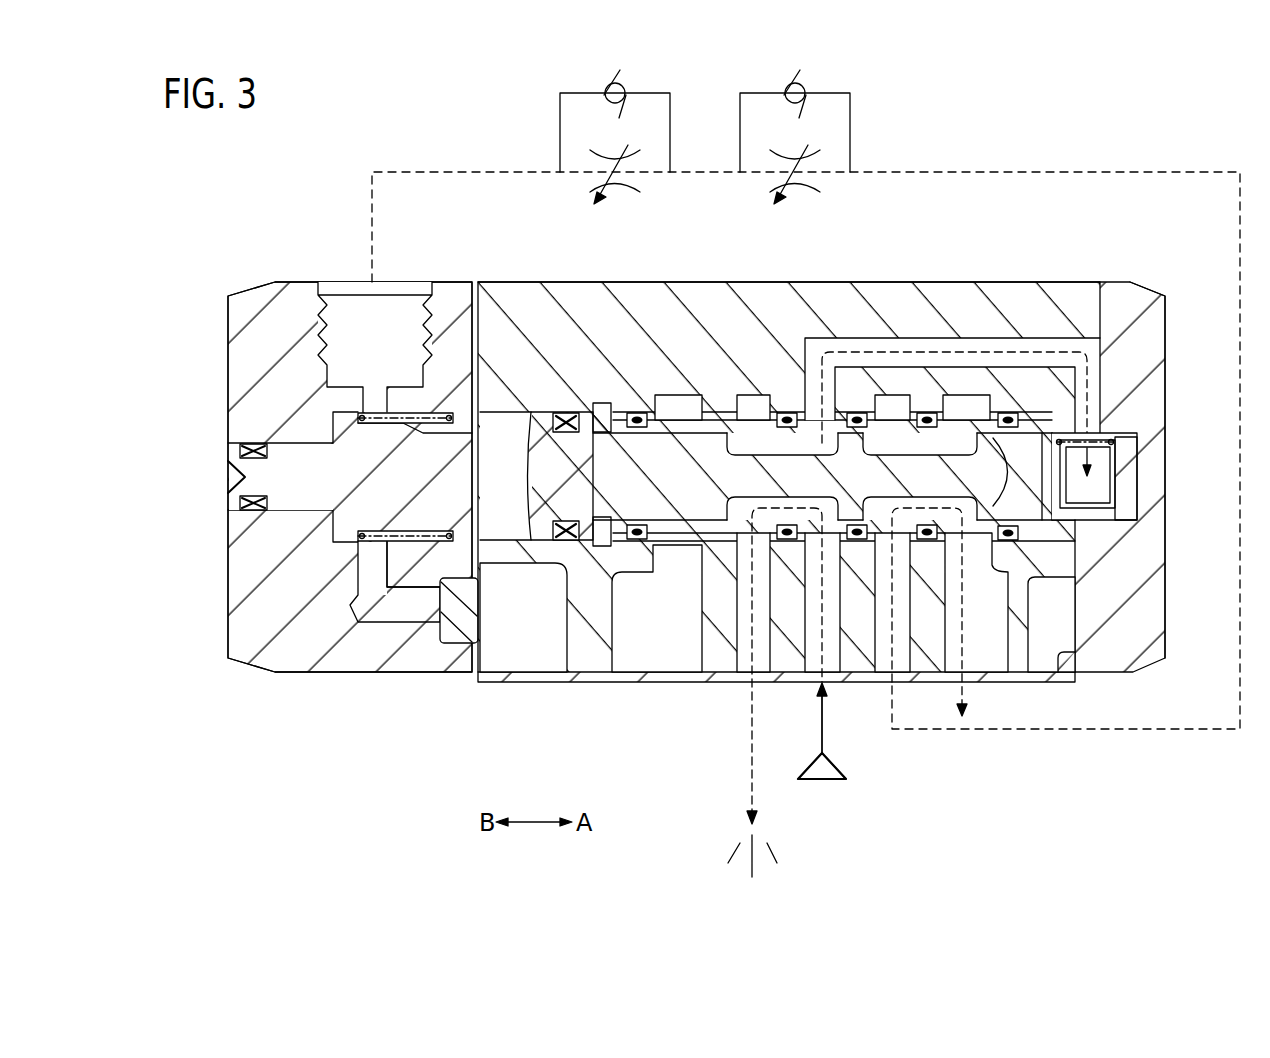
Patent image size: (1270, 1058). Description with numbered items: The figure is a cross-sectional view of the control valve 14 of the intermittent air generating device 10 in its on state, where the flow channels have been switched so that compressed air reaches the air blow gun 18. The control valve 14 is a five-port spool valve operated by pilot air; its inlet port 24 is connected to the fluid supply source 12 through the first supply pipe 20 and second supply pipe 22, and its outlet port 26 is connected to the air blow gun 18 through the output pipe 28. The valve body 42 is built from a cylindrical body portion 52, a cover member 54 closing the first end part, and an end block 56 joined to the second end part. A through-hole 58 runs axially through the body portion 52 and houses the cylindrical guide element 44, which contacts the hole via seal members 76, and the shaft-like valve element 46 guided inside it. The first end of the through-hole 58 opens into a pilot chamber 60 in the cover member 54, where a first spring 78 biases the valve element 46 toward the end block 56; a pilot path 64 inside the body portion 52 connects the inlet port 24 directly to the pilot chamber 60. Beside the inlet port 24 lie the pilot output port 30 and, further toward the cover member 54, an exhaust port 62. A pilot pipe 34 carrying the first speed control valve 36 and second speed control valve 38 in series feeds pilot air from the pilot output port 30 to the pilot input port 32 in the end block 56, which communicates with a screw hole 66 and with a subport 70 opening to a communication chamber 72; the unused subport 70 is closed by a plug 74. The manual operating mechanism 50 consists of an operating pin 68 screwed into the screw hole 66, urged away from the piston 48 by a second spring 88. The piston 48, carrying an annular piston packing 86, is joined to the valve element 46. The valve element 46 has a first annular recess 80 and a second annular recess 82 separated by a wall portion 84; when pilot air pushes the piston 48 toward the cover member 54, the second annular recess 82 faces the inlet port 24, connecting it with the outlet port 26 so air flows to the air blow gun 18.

The intermittent air generating device 10 is at (284, 183).
The fluid supply source 12 is at (822, 781).
The control valve 14 is at (1026, 268).
The air blow gun 18 is at (752, 813).
The first supply pipe 20 is at (823, 732).
The second supply pipe 22 is at (858, 769).
The inlet port 24 is at (808, 652).
The outlet port 26 is at (740, 645).
The output pipe 28 is at (750, 787).
The pilot output port 30 is at (898, 653).
The pilot input port 32 is at (395, 312).
The pilot pipe 34 is at (996, 168).
The first speed control valve 36 is at (859, 101).
The second speed control valve 38 is at (556, 101).
The valve body 42 is at (857, 283).
The guide element 44 is at (945, 505).
The valve element 46 is at (688, 508).
The piston 48 is at (552, 465).
The manual operating mechanism 50 is at (228, 499).
The body portion 52 is at (650, 300).
The cover member 54 is at (1140, 358).
The end block 56 is at (296, 645).
The through-hole 58 is at (1080, 523).
The pilot chamber 60 is at (1058, 540).
The exhaust port 62 is at (983, 657).
The pilot path 64 is at (963, 338).
The screw hole 66 is at (290, 452).
The operating pin 68 is at (265, 472).
The subport 70 is at (390, 645).
The communication chamber 72 is at (525, 650).
The plug 74 is at (462, 643).
The seal members 76 is at (637, 413).
The first spring 78 is at (1117, 440).
The first annular recess 80 is at (893, 447).
The second annular recess 82 is at (757, 446).
The wall portion 84 is at (845, 450).
The piston packing 86 is at (567, 413).
The second spring 88 is at (342, 537).